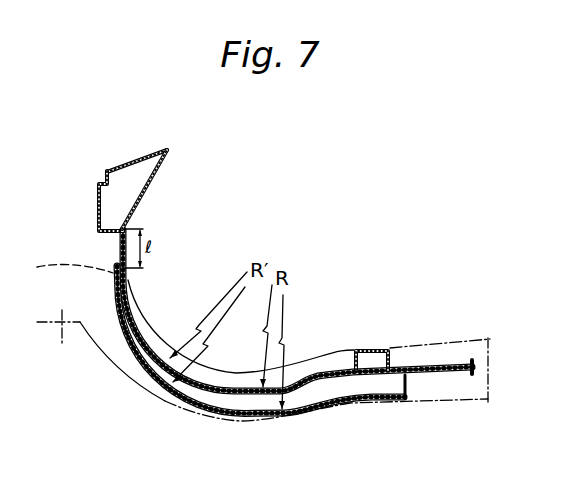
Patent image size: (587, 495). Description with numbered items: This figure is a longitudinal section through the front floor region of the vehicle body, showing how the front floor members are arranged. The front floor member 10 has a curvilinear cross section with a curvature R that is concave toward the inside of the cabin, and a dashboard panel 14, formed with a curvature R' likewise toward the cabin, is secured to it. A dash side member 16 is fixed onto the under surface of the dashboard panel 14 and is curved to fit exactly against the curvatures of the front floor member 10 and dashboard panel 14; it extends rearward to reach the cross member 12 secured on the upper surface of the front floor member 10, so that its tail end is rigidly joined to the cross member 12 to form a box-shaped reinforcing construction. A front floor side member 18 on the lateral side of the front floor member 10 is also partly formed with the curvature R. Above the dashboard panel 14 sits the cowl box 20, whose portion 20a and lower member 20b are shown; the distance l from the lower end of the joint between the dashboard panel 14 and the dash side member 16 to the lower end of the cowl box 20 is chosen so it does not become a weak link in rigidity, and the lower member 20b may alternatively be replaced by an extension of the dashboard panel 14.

The front floor member 10 is at (333, 371).
The cross member 12 is at (372, 349).
The dashboard panel 14 is at (134, 316).
The dash side member 16 is at (201, 411).
The front floor side member 18 is at (262, 343).
The cowl box 20 is at (126, 178).
The retainer leg portion 20a is at (97, 192).
The lower member 20b is at (144, 198).